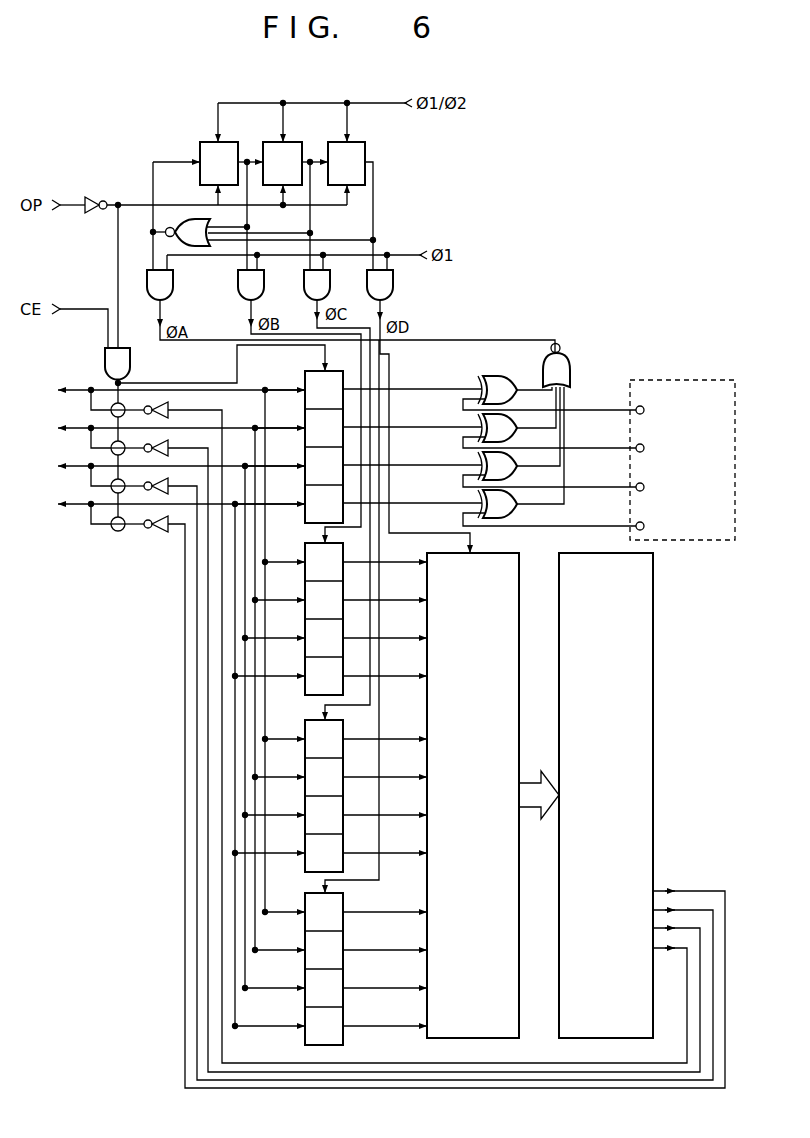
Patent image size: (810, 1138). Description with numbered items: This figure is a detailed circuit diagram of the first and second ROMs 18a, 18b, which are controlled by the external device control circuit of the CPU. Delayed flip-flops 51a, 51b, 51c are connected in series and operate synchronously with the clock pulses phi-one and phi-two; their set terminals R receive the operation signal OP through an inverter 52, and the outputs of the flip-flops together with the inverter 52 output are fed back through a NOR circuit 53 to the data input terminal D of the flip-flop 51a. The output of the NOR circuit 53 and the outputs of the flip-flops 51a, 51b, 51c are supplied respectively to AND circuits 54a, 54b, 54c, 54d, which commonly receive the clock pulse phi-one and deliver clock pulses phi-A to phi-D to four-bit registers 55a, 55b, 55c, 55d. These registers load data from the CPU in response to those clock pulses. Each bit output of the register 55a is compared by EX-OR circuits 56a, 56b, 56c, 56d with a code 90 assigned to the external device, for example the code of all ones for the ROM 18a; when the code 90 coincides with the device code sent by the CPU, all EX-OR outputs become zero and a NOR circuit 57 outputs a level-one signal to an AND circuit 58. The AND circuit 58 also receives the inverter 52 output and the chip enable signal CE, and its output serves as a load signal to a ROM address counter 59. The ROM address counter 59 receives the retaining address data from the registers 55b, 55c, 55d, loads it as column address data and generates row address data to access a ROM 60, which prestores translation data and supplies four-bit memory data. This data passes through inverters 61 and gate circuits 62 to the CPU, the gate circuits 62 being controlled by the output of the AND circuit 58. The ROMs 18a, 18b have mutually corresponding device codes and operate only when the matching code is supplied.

The first ROM 18a is at (574, 238).
The second ROM 18b is at (627, 199).
The delayed flip-flop 51a is at (200, 142).
The delayed flip-flop 51b is at (300, 142).
The delayed flip-flop 51c is at (365, 152).
The inverter 52 is at (95, 197).
The NOR circuit 53 is at (186, 220).
The AND circuit 54a is at (173, 288).
The AND circuit 54b is at (248, 282).
The AND circuit 54c is at (308, 288).
The AND circuit 54d is at (393, 286).
The register 55a is at (298, 382).
The register 55b is at (310, 552).
The register 55c is at (310, 729).
The register 55d is at (310, 902).
The EX-OR circuit 56a is at (495, 378).
The EX-OR circuit 56b is at (478, 420).
The EX-OR circuit 56c is at (478, 458).
The EX-OR circuit 56d is at (478, 496).
The NOR circuit 57 is at (566, 358).
The AND circuit 58 is at (131, 366).
The ROM address counter 59 is at (519, 612).
The ROM 60 is at (653, 612).
The inverters 61 is at (158, 534).
The gate circuits 62 is at (118, 533).
The code 90 is at (682, 380).